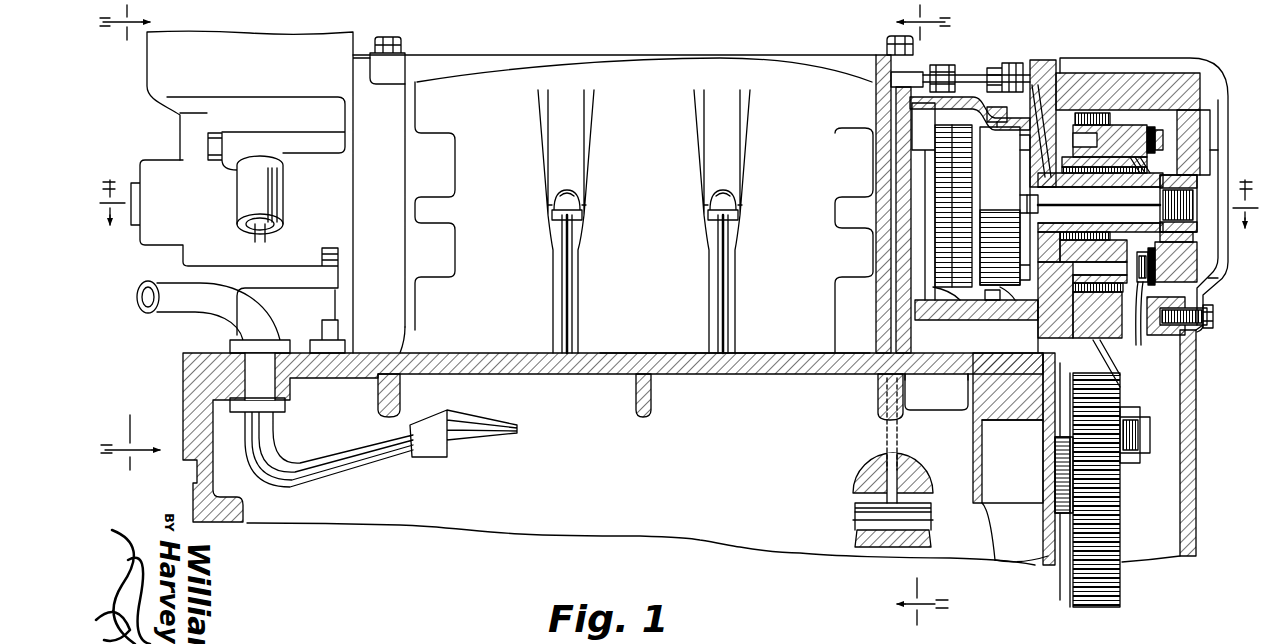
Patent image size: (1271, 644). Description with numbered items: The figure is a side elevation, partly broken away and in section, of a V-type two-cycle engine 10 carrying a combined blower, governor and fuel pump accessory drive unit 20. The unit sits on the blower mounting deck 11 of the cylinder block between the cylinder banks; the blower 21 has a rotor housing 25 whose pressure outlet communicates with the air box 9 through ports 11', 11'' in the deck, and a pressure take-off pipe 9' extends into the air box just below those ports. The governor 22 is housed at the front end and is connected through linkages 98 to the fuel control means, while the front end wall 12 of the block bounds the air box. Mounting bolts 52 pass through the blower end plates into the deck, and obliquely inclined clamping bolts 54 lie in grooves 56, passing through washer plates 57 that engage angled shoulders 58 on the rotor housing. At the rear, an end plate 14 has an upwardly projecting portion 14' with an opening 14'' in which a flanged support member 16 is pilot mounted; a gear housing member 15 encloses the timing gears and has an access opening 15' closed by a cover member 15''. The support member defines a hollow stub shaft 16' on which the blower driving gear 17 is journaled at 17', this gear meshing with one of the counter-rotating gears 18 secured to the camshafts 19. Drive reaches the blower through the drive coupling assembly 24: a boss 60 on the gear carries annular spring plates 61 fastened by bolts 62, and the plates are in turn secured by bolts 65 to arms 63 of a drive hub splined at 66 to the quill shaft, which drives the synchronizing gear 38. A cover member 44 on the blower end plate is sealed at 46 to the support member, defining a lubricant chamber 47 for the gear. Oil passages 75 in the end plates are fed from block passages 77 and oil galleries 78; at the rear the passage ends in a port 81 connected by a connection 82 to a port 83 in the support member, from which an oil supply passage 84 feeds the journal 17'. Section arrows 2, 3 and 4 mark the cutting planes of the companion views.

The section line 3- 3 is at (135, 245).
The section line 2- 2 is at (677, 226).
The section line 4- 4 is at (910, 314).
The combined blower, governor and fuel pump accessory drive unit 20 is at (165, 87).
The governor 22 is at (170, 235).
The linkages 98 is at (240, 238).
The mounting bolts 52 is at (398, 45).
The blower 21 is at (475, 60).
The rotor housing 25 is at (778, 62).
The blower mounting upper deck 11 is at (727, 339).
The ports 11' is at (443, 338).
The cylinder 11'' is at (836, 242).
The obliquely inclined bolts 54 is at (574, 268).
The grooves 56 is at (551, 312).
The nut 57 is at (582, 211).
The angled shoulders 58 is at (550, 212).
The internal combustion engine 10 is at (198, 372).
The front end wall 12 is at (183, 485).
The pressure take-off pipe 9' is at (327, 387).
The air box 9 is at (713, 545).
The passages 77 is at (882, 452).
The oil distribution galleries 78 is at (872, 530).
The passages 75 is at (888, 312).
The port 81 is at (918, 80).
The connection 82 is at (975, 75).
The port 83 is at (1040, 75).
The projecting portion of end plate 14' is at (1008, 82).
The timing gear 38 is at (958, 140).
The flanged support member 16 is at (977, 310).
The seal 46 is at (992, 305).
The opening 14'' is at (1020, 326).
The gear 17 is at (1113, 192).
The journal bearing 17' is at (1015, 198).
The boss 60 is at (1165, 125).
The oil supply passage 84 is at (1098, 113).
The bolts 62 is at (1190, 112).
The hollow stub shaft portion 16' is at (1180, 190).
The spline 66 is at (1190, 238).
The annular spring plates 61 is at (1160, 265).
The bolts 65 is at (1138, 319).
The cover member 15'' is at (1201, 315).
The drive coupling assembly 24 is at (1225, 172).
The accessory gear access opening 15' is at (1225, 122).
The arms 63 is at (1200, 150).
The gear housing member 15 is at (1185, 463).
The end plate 14 is at (1025, 478).
The counter-rotating gear 18 is at (1113, 383).
The camshaft 19 is at (1147, 447).
The lubricant receiving chamber 47 is at (918, 389).
The cover member 44 is at (953, 389).